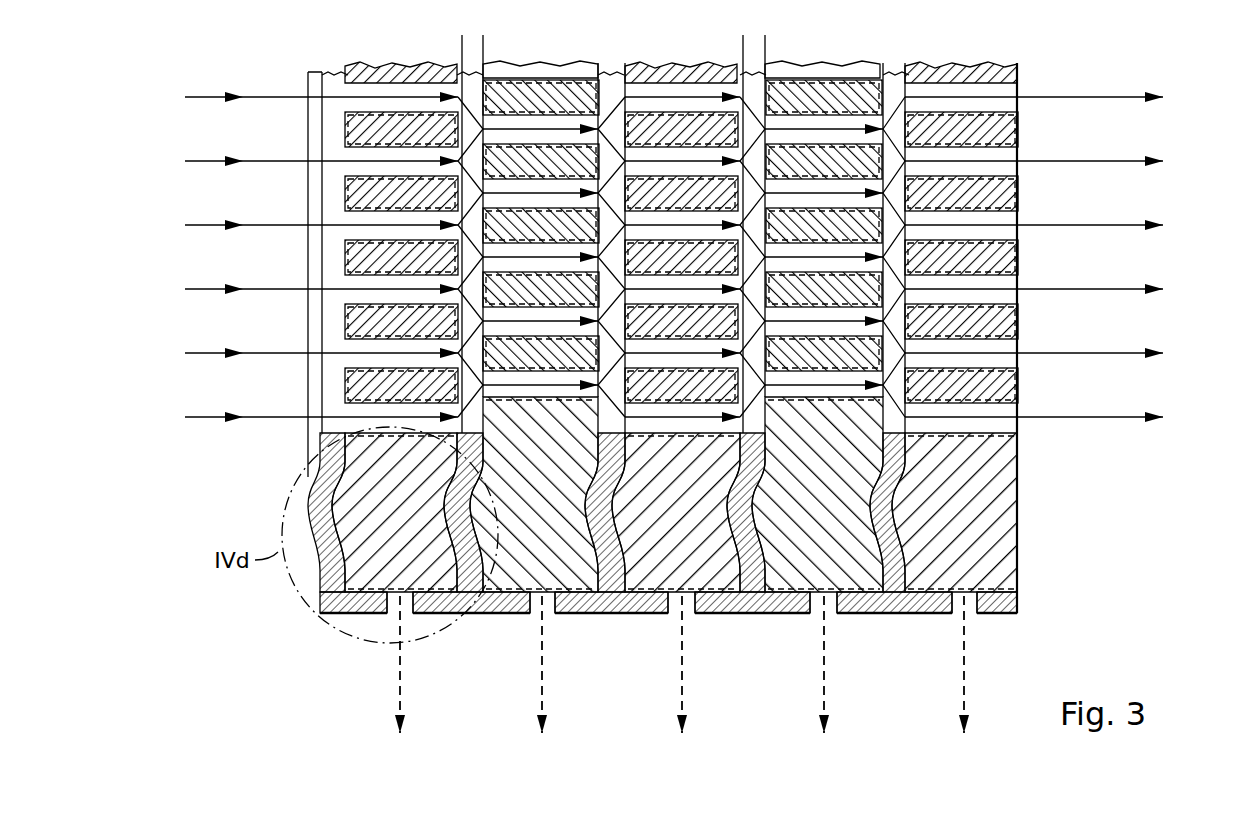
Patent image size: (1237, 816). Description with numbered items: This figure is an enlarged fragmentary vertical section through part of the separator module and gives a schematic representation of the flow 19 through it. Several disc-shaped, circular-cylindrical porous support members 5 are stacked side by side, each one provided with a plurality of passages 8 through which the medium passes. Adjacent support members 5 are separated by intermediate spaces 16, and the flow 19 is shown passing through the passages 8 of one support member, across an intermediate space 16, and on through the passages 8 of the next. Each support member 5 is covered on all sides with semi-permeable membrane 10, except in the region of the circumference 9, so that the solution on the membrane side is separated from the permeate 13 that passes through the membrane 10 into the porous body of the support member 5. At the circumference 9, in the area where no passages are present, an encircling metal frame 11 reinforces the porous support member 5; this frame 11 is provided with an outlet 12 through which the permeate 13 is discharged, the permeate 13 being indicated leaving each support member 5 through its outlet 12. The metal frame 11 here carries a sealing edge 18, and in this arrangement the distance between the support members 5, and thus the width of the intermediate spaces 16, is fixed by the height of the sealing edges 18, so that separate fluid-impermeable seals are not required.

The support member 5 is at (973, 542).
The passages 8 is at (345, 86).
The circumference 9 is at (580, 606).
The semi-permeable membrane 10 is at (646, 80).
The metal frame 11 is at (355, 608).
The outlet 12 is at (532, 606).
The permeate 13 is at (975, 740).
The intermediate spaces 16 is at (420, 45).
The sealing edge 18 is at (316, 487).
The flow 19 is at (185, 97).